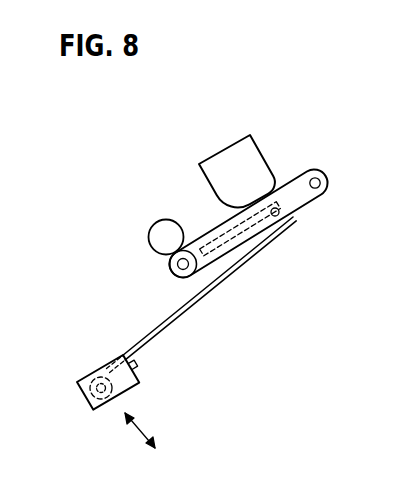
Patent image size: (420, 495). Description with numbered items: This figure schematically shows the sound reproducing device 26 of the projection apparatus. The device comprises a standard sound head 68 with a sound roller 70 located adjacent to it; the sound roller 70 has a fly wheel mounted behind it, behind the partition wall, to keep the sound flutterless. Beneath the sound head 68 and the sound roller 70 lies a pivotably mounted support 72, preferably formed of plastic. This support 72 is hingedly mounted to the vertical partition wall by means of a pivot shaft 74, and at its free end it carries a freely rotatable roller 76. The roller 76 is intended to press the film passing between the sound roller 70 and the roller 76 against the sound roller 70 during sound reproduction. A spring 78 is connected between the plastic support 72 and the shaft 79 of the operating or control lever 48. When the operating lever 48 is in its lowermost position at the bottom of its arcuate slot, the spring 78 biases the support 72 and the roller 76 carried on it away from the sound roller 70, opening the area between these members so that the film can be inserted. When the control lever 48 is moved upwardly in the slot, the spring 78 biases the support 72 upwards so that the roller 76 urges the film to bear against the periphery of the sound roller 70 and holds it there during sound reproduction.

The sound reproducing device 26 is at (293, 315).
The operating lever 48 is at (77, 387).
The sound head 68 is at (223, 157).
The sound roller 70 is at (149, 229).
The support 72 is at (307, 196).
The pivot shaft 74 is at (320, 180).
The roller 76 is at (171, 270).
The spring 78 is at (191, 302).
The shaft 79 is at (97, 368).